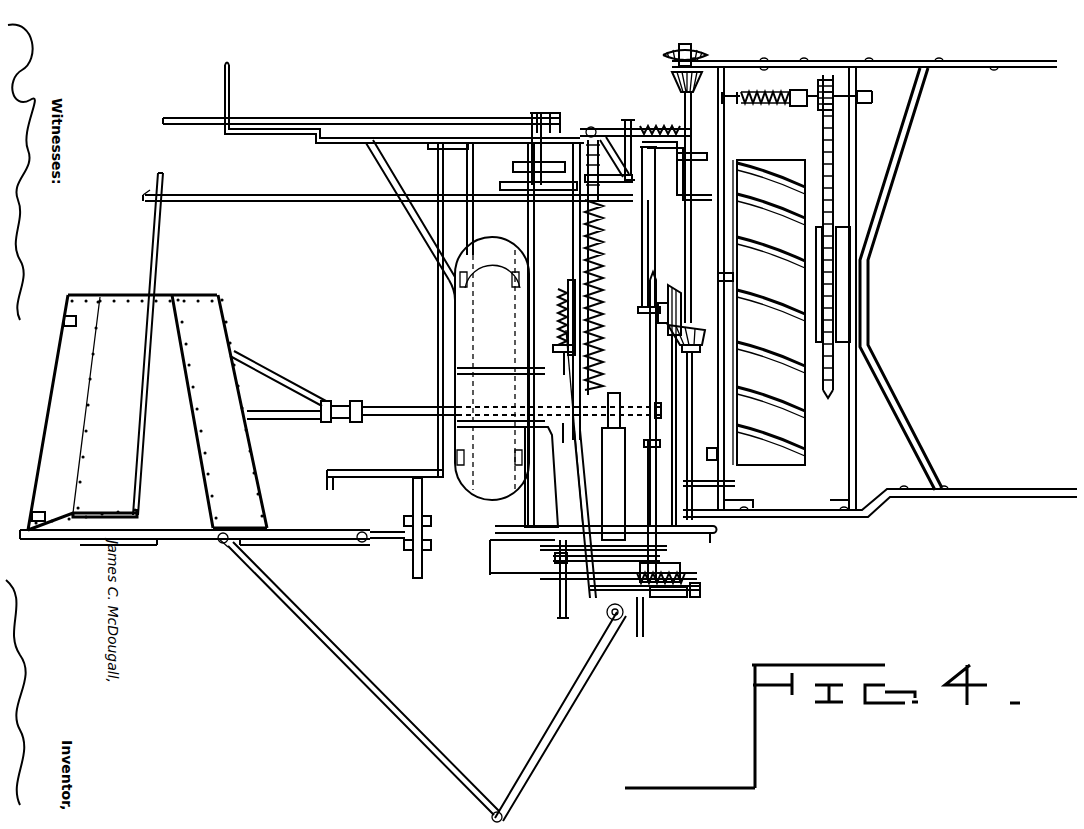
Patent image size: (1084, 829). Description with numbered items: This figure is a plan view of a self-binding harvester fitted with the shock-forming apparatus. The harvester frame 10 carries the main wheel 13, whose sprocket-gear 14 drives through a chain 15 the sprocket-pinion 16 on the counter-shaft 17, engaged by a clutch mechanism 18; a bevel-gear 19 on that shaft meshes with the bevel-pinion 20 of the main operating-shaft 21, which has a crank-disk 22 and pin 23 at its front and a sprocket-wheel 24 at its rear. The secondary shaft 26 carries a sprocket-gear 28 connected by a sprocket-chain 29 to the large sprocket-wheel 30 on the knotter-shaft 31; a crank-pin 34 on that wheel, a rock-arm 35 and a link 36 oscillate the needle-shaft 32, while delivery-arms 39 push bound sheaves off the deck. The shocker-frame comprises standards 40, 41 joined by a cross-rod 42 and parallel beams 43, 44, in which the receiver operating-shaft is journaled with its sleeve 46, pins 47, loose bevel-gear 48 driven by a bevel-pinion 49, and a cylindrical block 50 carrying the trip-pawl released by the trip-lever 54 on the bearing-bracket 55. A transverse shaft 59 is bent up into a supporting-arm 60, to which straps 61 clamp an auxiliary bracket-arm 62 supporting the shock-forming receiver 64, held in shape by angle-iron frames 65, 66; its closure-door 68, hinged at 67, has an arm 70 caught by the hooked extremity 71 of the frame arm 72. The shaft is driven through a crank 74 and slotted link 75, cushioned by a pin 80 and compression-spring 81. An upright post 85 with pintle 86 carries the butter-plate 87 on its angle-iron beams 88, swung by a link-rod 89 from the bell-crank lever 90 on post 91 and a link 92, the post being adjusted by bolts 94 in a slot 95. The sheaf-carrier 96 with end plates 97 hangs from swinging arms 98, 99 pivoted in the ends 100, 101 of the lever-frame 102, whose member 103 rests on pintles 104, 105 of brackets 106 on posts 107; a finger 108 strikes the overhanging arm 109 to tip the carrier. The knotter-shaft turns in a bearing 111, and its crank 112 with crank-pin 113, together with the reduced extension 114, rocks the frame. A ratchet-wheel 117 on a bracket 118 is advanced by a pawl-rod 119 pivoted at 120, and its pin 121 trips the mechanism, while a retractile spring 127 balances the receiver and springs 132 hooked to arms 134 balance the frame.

The frame 10 is at (1026, 68).
The main wheel 13 is at (803, 443).
The sprocket-gear 14 is at (836, 395).
The chain 15 is at (852, 365).
The sprocket-pinion 16 is at (828, 80).
The counter-shaft 17 is at (872, 97).
The clutch mechanism 18 is at (800, 108).
The bevel-gear 19 is at (722, 127).
The bevel-pinion 20 is at (672, 80).
The main operating-shaft 21 is at (685, 232).
The crank-disk 22 is at (716, 528).
The pin 23 is at (700, 545).
The sprocket-wheel 24 is at (700, 50).
The secondary shaft 26 is at (674, 430).
The sprocket-gear 28 is at (685, 572).
The sprocket-chain 29 is at (520, 527).
The sprocket-wheel 30 is at (488, 560).
The knotter-shaft 31 is at (535, 252).
The needle-shaft 32 is at (614, 393).
The crank-pin 34 is at (553, 556).
The rock-arm 35 is at (690, 565).
The link 36 is at (595, 560).
The delivery-arms 39 is at (499, 375).
The horizontal standard 40 is at (736, 484).
The horizontal standard 41 is at (490, 140).
The cross-rod 42 is at (438, 328).
The parallel beam 43 is at (642, 215).
The parallel beam 44 is at (578, 233).
The sleeve 46 is at (605, 320).
The diametrical pins 47 is at (658, 313).
The bevel-gear 48 is at (674, 285).
The bevel-pinion 49 is at (700, 349).
The cylindrical block 50 is at (661, 318).
The trip-lever 54 is at (687, 400).
The bearing-bracket 55 is at (705, 470).
The shaft 59 is at (430, 407).
The supporting-arm 60 is at (306, 420).
The straps 61 is at (326, 401).
The auxiliary bracket-arm 62 is at (268, 361).
The shock-forming receiver 64 is at (210, 322).
The angle-iron frame 65 is at (218, 296).
The angle-iron frame 66 is at (96, 513).
The hinge 67 is at (72, 326).
The closure-door 68 is at (115, 447).
The arm 70 is at (157, 243).
The hooked extremity 71 is at (145, 197).
The arm 72 is at (278, 202).
The crank 74 is at (578, 268).
The link 75 is at (570, 390).
The pin 80 is at (560, 365).
The compression-spring 81 is at (559, 296).
The upright post 85 is at (410, 540).
The pintle 86 is at (362, 546).
The butter-plate 87 is at (157, 546).
The angle-iron beams 88 is at (300, 541).
The link-rod 89 is at (333, 652).
The bell-crank lever 90 is at (545, 722).
The upright post 91 is at (606, 616).
The link 92 is at (584, 503).
The bolts 94 is at (435, 541).
The slot 95 is at (568, 425).
The sheaf-carrier 96 is at (496, 366).
The end plates 97 is at (460, 513).
The swinging arm 98 is at (402, 222).
The swinging arm 99 is at (388, 470).
The projecting end 100 is at (320, 138).
The projecting end 101 is at (326, 488).
The lever-frame 102 is at (373, 118).
The longitudinal member 103 is at (446, 272).
The pintle 104 is at (626, 122).
The pintle 105 is at (640, 637).
The brackets 106 is at (612, 183).
The upstanding posts 107 is at (648, 470).
The finger 108 is at (228, 65).
The overhanging arm 109 is at (175, 118).
The bearing 111 is at (530, 190).
The crank 112 is at (536, 160).
The crank-pin 113 is at (560, 113).
The reduced extension 114 is at (560, 612).
The ratchet-wheel 117 is at (648, 600).
The bracket 118 is at (700, 590).
The pawl-rod 119 is at (680, 598).
The pivot 120 is at (605, 612).
The pin 121 is at (702, 596).
The retractile spring 127 is at (642, 250).
The springs 132 is at (650, 126).
The rearwardly-extending arms 134 is at (618, 120).